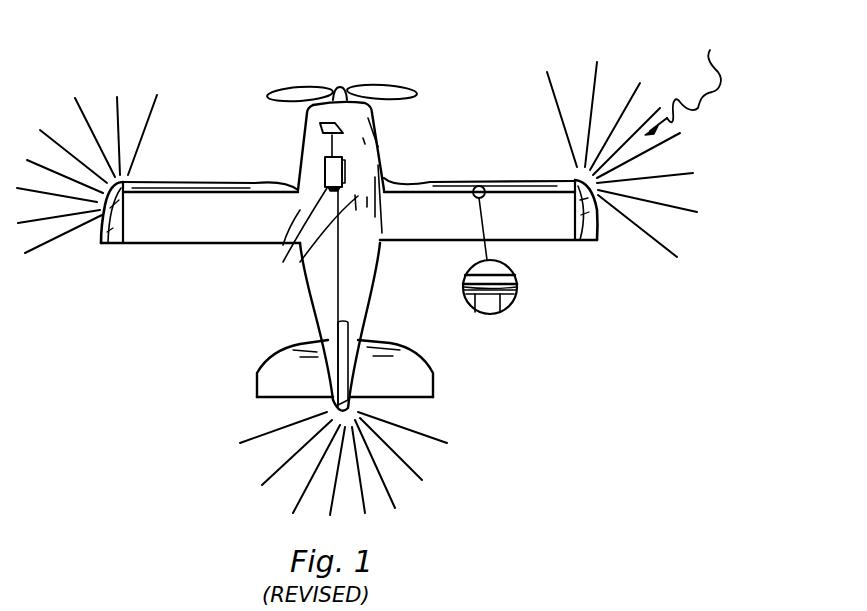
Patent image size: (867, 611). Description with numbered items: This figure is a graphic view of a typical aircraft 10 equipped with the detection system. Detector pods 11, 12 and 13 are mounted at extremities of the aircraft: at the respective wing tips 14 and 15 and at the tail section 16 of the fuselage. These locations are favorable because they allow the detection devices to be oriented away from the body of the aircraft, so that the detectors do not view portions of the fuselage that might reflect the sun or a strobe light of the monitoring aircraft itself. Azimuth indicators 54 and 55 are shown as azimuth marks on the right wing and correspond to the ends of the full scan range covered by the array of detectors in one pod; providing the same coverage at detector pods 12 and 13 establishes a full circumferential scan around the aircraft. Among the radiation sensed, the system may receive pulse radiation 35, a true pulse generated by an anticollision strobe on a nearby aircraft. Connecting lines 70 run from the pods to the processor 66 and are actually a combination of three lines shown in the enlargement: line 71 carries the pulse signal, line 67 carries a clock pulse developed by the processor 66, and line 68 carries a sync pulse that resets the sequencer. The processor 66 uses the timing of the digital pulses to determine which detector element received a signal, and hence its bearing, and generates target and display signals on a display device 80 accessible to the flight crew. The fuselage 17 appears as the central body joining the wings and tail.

The aircraft 10 is at (552, 243).
The detector pod 11 is at (570, 178).
The detector pod 12 is at (357, 412).
The detector pod 13 is at (107, 212).
The wing tip 14 is at (590, 220).
The wing tip 15 is at (113, 237).
The tail section 16 is at (327, 412).
The fuselage 17 is at (357, 290).
The pulse radiation 35 is at (685, 82).
The azimuth indicator 54 is at (555, 102).
The azimuth indicator 55 is at (670, 247).
The processor 66 is at (346, 170).
The line 67 is at (477, 307).
The line 68 is at (493, 312).
The connecting lines 70 is at (333, 263).
The line 71 is at (510, 267).
The display device 80 is at (343, 130).